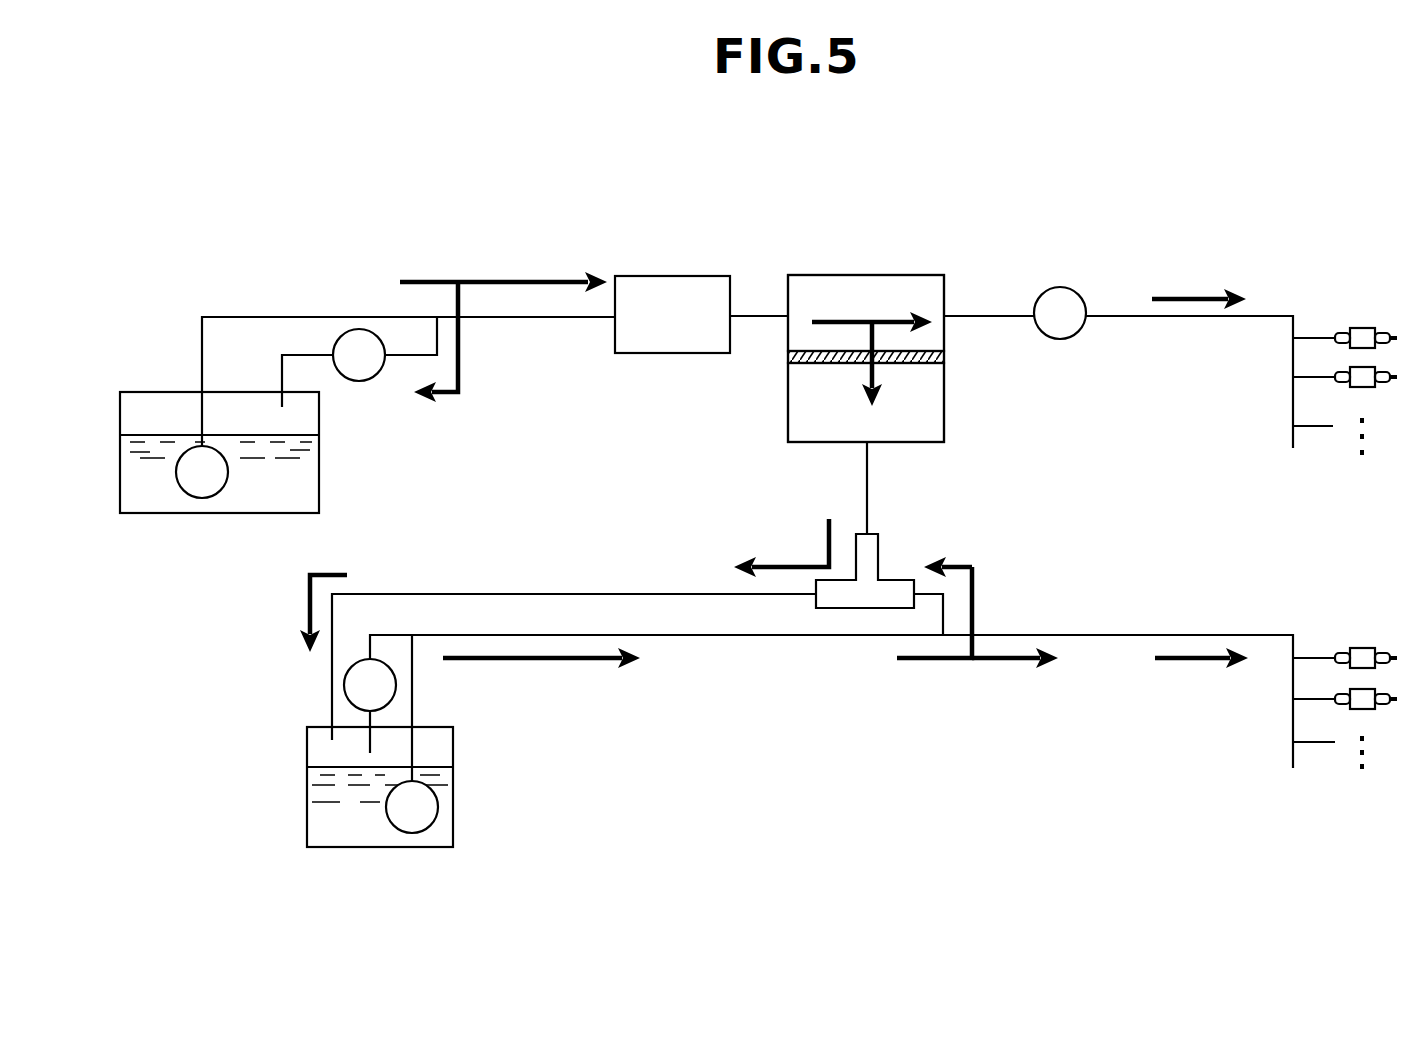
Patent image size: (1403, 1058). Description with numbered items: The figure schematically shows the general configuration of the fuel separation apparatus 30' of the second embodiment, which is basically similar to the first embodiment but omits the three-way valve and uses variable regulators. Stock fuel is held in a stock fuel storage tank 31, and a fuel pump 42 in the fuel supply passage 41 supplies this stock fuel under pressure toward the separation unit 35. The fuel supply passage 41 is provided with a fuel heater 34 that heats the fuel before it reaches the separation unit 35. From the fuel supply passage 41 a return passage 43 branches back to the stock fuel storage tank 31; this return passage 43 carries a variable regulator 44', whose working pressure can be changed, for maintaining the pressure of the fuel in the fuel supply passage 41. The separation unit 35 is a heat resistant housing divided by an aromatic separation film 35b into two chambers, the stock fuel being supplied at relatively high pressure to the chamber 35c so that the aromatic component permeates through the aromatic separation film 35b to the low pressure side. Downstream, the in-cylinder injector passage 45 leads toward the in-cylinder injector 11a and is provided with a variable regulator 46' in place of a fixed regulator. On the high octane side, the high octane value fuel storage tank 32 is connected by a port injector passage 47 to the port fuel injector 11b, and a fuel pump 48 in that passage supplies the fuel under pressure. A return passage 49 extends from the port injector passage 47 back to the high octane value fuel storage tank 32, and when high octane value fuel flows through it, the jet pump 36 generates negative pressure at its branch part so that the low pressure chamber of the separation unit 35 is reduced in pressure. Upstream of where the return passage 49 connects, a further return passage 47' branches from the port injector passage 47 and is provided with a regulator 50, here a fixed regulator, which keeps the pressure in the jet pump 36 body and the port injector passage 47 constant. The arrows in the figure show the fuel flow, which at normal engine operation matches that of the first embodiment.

The fuel separation apparatus 30' is at (800, 183).
The stock fuel storage tank 31 is at (140, 513).
The high octane value fuel storage tank 32 is at (453, 820).
The fuel heater 34 is at (700, 276).
The separation unit 35 is at (930, 275).
The aromatic separation film 35b is at (788, 356).
The chamber 35c is at (945, 344).
The jet pump 36 is at (880, 550).
The fuel supply passage 41 is at (305, 316).
The fuel pump 42 is at (212, 498).
The return passage 43 is at (398, 357).
The variable regulator 44' is at (359, 393).
The in-cylinder injector passage 45 is at (1122, 313).
The variable regulator 46' is at (1069, 347).
The port injector passage 47 is at (873, 670).
The return passage 47' is at (402, 654).
The fuel pump 48 is at (400, 832).
The return passage 49 is at (614, 593).
The regulator 50 is at (345, 667).
The in-cylinder injector 11a is at (1358, 327).
The port fuel injector 11b is at (1360, 648).